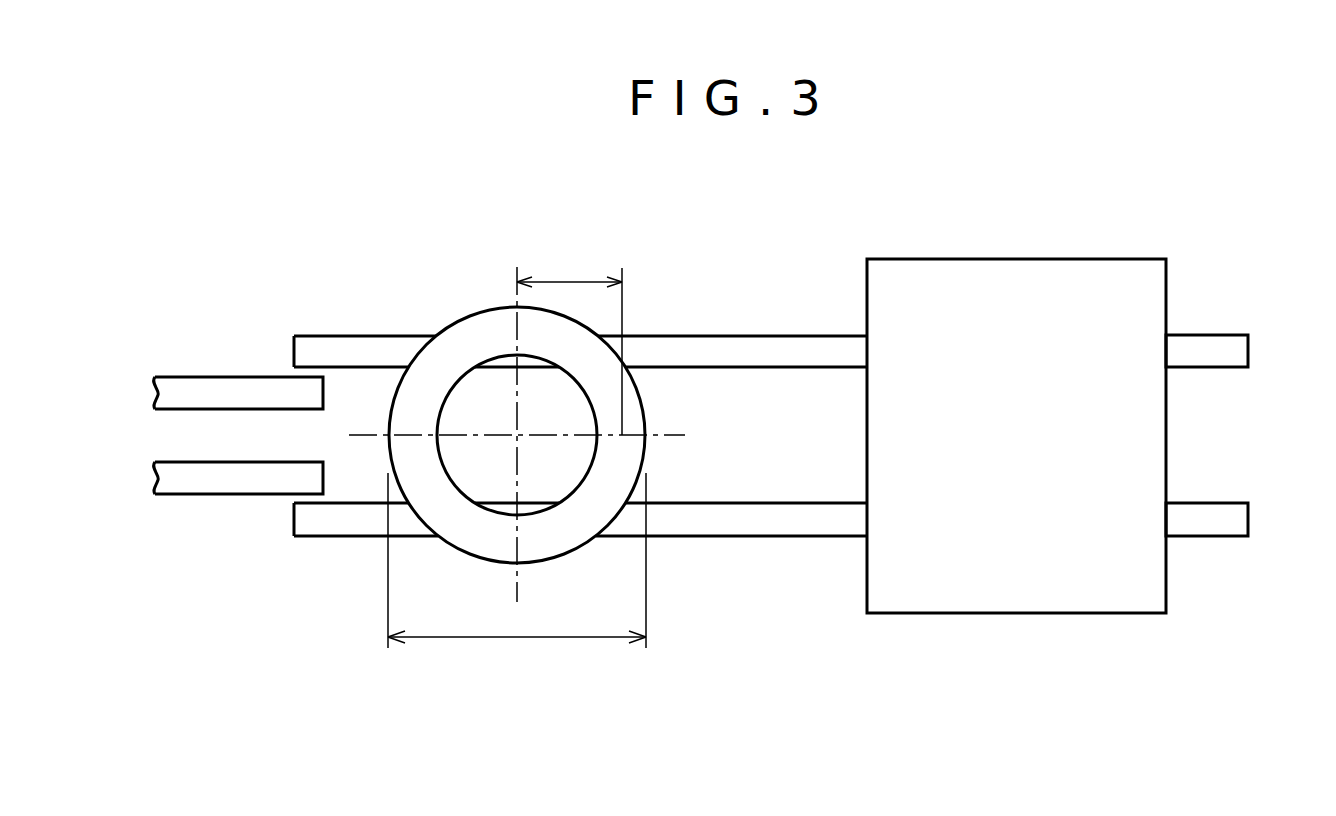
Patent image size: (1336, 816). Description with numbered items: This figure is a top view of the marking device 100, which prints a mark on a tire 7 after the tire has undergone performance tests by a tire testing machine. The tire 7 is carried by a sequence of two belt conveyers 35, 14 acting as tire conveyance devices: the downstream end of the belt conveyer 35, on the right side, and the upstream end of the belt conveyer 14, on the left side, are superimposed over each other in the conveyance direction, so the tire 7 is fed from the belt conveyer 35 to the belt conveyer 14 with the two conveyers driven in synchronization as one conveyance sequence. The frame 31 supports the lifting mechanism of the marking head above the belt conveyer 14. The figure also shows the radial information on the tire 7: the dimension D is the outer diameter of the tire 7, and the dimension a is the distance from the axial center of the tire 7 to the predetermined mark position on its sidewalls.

The marking device 100 is at (925, 644).
The frame 31 is at (1014, 258).
The belt conveyer 14 is at (1222, 355).
The belt conveyer 35 is at (229, 396).
The tire 7 is at (466, 318).